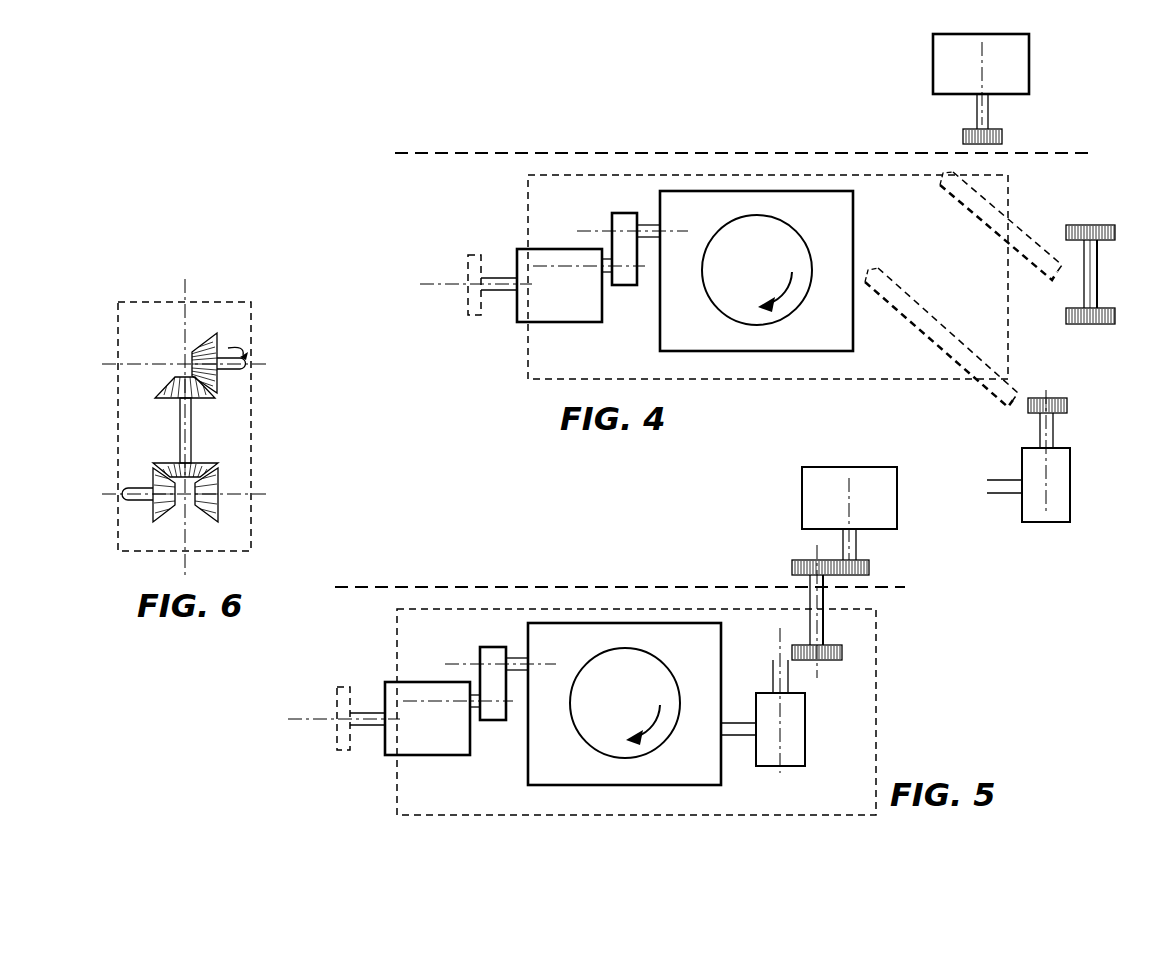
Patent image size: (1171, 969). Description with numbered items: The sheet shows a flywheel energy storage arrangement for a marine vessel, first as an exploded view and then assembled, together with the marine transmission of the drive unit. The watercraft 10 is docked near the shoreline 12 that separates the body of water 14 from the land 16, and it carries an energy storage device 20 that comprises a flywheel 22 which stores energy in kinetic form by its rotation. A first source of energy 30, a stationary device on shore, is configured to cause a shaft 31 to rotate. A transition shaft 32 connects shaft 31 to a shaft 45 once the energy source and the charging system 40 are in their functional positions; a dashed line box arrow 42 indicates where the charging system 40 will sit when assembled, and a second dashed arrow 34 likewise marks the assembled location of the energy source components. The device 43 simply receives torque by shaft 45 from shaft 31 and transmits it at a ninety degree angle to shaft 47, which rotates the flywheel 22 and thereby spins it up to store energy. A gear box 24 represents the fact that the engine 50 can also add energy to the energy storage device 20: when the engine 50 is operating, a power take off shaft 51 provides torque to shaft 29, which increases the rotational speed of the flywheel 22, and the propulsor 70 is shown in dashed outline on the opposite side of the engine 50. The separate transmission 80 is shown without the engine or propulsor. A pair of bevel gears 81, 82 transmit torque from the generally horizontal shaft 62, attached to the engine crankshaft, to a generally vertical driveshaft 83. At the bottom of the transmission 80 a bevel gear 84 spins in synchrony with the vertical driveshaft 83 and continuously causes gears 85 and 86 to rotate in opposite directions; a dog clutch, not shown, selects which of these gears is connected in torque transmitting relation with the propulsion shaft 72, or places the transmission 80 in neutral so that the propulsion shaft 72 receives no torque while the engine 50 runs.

In FIG. 4, the watercraft 10 is at (710, 178).
In FIG. 5, the watercraft 10 is at (578, 612).
In FIG. 4, the shoreline 12 is at (535, 150).
In FIG. 5, the shoreline 12 is at (412, 585).
In FIG. 4, the body of water 14 is at (475, 186).
In FIG. 5, the body of water 14 is at (373, 618).
In FIG. 4, the land 16 is at (475, 144).
In FIG. 5, the land 16 is at (373, 578).
In FIG. 4, the energy storage device 20 is at (775, 198).
In FIG. 5, the energy storage device 20 is at (642, 630).
In FIG. 4, the flywheel 22 is at (727, 298).
In FIG. 5, the flywheel 22 is at (597, 731).
In FIG. 4, the gear box 24 is at (624, 213).
In FIG. 5, the gear box 24 is at (490, 647).
In FIG. 5, the shaft 29 is at (515, 656).
In FIG. 4, the first source of energy 30 is at (940, 60).
In FIG. 5, the first source of energy 30 is at (805, 493).
In FIG. 4, the shaft 31 is at (975, 116).
In FIG. 5, the shaft 31 is at (860, 546).
In FIG. 4, the transition shaft 32 is at (1100, 222).
In FIG. 5, the transition shaft 32 is at (823, 632).
In FIG. 4, the displacement arrow 34 is at (975, 212).
In FIG. 4, the charging system 40 is at (1060, 501).
In FIG. 5, the charging system 40 is at (800, 732).
In FIG. 4, the dashed line box arrow 42 is at (910, 318).
In FIG. 4, the device 43 is at (1070, 470).
In FIG. 4, the shaft 45 is at (1040, 432).
In FIG. 5, the shaft 45 is at (775, 678).
In FIG. 4, the shaft 47 is at (1008, 493).
In FIG. 5, the shaft 47 is at (738, 735).
In FIG. 4, the engine 50 is at (544, 253).
In FIG. 5, the engine 50 is at (413, 686).
In FIG. 5, the power take off shaft 51 is at (476, 710).
In FIG. 6, the horizontal shaft 62 is at (245, 372).
In FIG. 4, the propulsor 70 is at (472, 255).
In FIG. 5, the propulsor 70 is at (342, 688).
In FIG. 6, the propulsion shaft 72 is at (140, 488).
In FIG. 6, the transmission 80 is at (250, 282).
In FIG. 6, the bevel gear 81 is at (205, 333).
In FIG. 6, the bevel gear 82 is at (165, 393).
In FIG. 6, the vertical driveshaft 83 is at (193, 430).
In FIG. 6, the bevel gear 84 is at (210, 466).
In FIG. 6, the gear 85 is at (220, 507).
In FIG. 6, the gear 86 is at (150, 507).